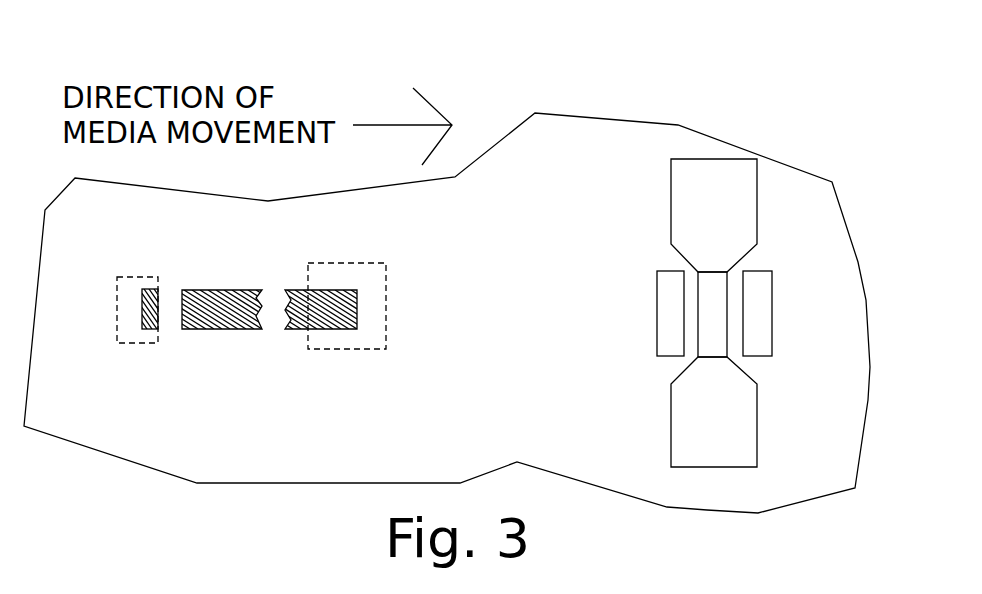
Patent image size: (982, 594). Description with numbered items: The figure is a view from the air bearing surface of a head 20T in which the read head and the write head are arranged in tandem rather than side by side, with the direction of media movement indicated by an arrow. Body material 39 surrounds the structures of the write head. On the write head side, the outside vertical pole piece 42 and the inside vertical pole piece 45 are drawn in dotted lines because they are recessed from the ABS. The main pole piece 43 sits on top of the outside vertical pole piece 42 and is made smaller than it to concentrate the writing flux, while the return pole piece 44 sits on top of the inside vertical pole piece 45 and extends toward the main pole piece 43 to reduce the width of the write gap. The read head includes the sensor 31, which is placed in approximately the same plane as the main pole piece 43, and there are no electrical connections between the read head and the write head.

The head 20T is at (802, 115).
The sensor 31 is at (717, 338).
The body material 39 is at (508, 242).
The outside vertical pole piece 42 is at (125, 283).
The main pole piece 43 is at (143, 328).
The return pole piece 44 is at (229, 325).
The inside vertical pole piece 45 is at (369, 338).